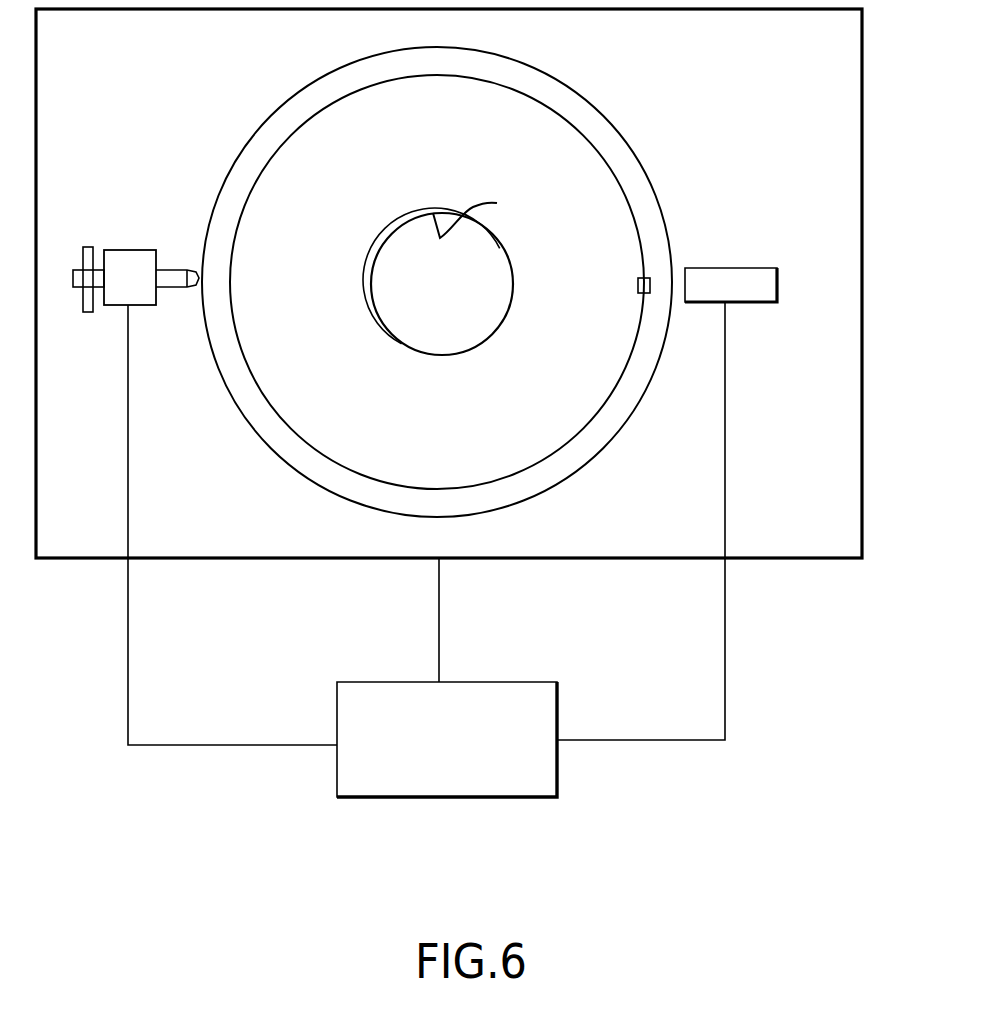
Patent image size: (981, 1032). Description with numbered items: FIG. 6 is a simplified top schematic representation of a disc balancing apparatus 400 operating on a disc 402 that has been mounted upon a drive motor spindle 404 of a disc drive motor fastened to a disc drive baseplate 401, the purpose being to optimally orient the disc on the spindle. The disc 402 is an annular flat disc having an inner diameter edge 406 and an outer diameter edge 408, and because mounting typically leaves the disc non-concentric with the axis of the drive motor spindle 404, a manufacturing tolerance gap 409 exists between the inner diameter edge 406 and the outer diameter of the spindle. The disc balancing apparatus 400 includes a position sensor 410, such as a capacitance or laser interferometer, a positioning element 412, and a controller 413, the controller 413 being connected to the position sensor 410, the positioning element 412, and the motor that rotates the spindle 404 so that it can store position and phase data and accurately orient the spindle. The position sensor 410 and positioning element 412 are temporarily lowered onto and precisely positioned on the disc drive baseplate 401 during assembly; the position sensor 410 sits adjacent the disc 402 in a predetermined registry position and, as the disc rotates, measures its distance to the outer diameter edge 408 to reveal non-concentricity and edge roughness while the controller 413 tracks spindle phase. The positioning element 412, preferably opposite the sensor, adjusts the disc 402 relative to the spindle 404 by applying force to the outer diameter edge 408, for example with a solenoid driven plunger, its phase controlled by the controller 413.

The disc balancing apparatus 400 is at (789, 726).
The disc drive baseplate 401 is at (803, 528).
The disc 402 is at (575, 155).
The drive motor spindle 404 is at (475, 310).
The inner diameter edge 406 is at (484, 214).
The outer diameter edge 408 is at (577, 468).
The manufacturing tolerance gap 409 is at (403, 222).
The position sensor 410 is at (738, 277).
The positioning element 412 is at (135, 258).
The controller 413 is at (352, 800).